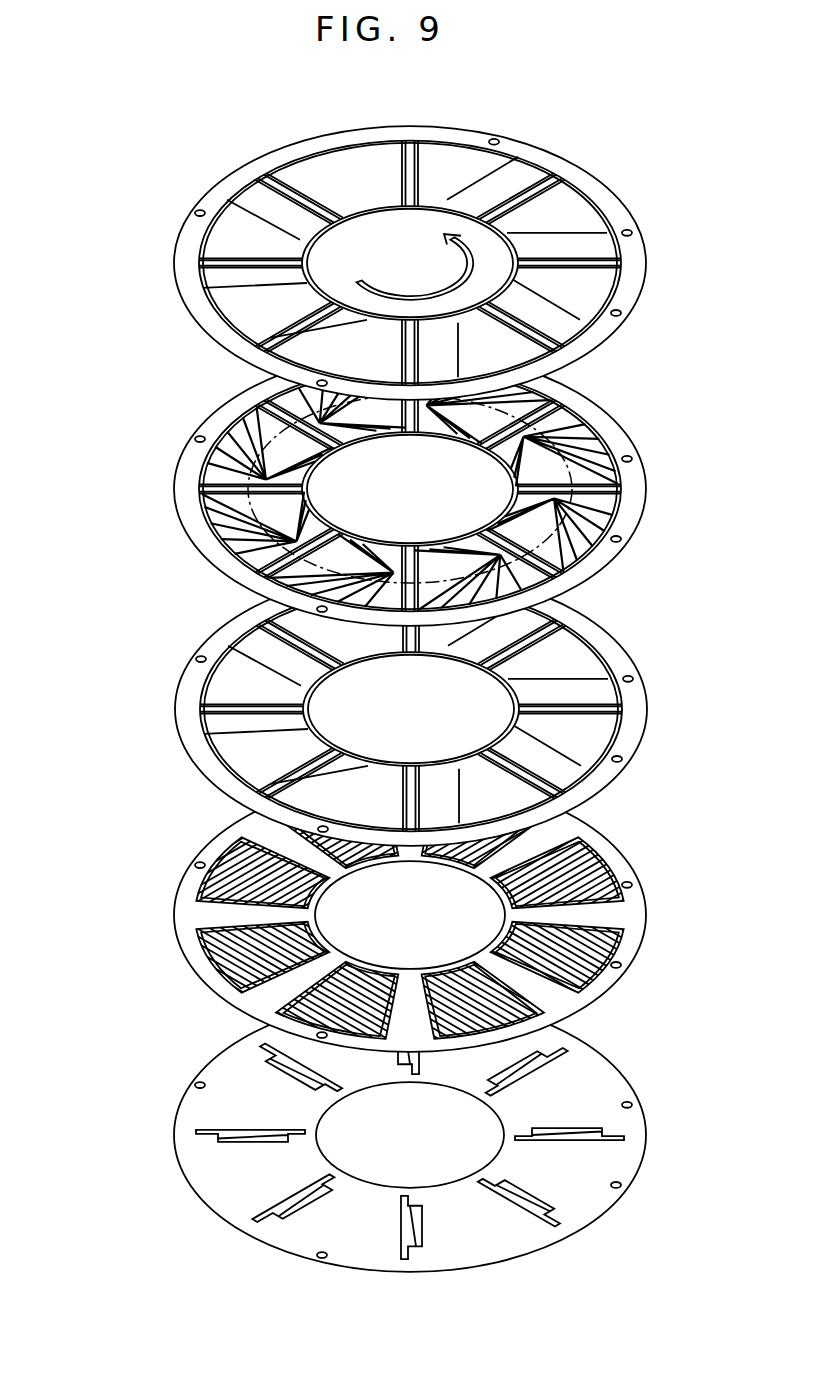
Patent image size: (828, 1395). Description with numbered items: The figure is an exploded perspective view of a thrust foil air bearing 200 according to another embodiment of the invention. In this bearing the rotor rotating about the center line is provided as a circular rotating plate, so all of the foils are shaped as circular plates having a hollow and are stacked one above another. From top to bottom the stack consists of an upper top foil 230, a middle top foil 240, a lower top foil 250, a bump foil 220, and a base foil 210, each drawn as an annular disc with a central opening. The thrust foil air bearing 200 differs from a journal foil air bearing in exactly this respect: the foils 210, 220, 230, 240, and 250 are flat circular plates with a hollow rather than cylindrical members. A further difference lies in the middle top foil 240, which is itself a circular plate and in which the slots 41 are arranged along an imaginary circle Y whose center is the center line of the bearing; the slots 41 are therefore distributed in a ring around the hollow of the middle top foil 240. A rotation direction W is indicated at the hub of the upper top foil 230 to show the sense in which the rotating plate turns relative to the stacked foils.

The thrust foil air bearing 200 is at (137, 157).
The upper top foil 230 is at (158, 232).
The middle top foil 240 is at (172, 405).
The lower top foil 250 is at (176, 628).
The bump foil 220 is at (176, 845).
The base foil 210 is at (178, 1058).
The slots 41 is at (582, 550).
The imaginary circle Y is at (565, 472).
The rotation direction W is at (437, 287).